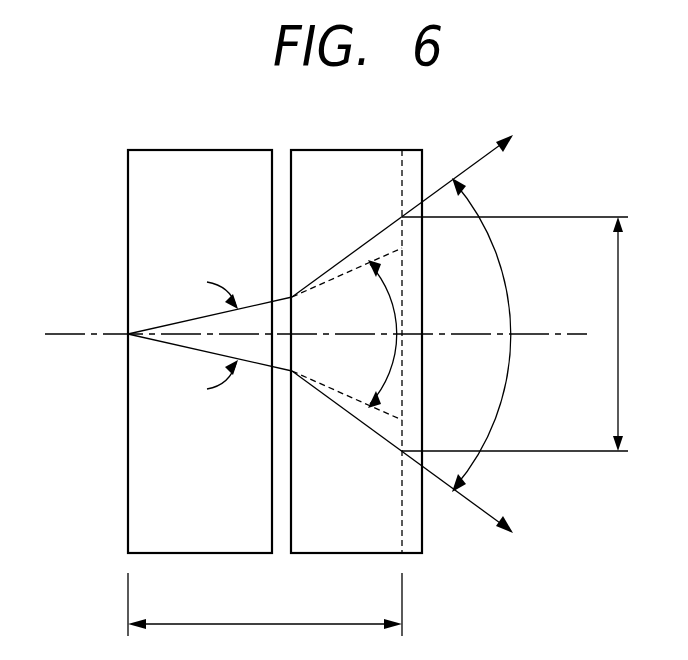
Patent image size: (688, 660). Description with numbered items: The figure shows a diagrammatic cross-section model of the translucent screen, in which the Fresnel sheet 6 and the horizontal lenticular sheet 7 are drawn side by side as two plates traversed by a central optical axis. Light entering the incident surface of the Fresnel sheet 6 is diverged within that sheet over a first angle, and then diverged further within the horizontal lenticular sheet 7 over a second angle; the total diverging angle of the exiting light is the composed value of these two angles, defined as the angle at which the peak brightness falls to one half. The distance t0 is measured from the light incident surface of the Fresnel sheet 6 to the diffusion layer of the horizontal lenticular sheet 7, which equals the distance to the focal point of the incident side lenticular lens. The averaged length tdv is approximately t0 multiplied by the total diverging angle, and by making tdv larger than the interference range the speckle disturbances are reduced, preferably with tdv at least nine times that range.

The Fresnel sheet 6 is at (228, 170).
The horizontal lenticular sheet 7 is at (373, 172).
The averaged length Tdv tdv is at (635, 334).
The distance t0 is at (265, 604).